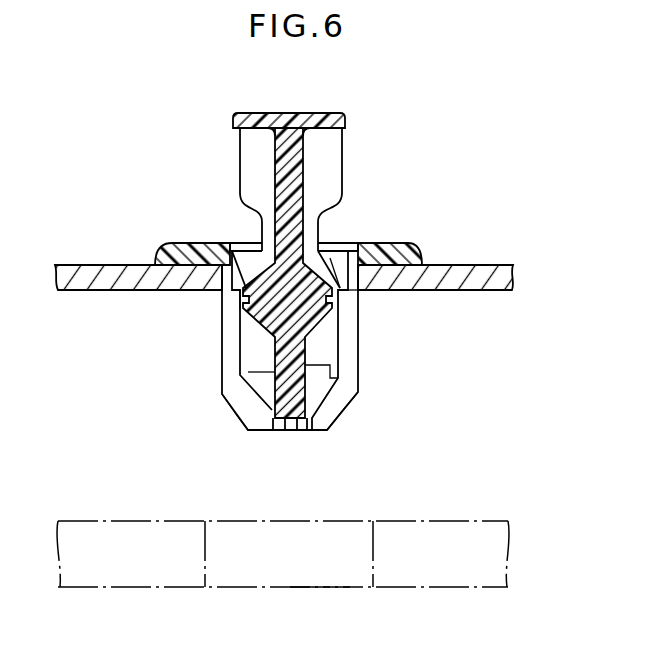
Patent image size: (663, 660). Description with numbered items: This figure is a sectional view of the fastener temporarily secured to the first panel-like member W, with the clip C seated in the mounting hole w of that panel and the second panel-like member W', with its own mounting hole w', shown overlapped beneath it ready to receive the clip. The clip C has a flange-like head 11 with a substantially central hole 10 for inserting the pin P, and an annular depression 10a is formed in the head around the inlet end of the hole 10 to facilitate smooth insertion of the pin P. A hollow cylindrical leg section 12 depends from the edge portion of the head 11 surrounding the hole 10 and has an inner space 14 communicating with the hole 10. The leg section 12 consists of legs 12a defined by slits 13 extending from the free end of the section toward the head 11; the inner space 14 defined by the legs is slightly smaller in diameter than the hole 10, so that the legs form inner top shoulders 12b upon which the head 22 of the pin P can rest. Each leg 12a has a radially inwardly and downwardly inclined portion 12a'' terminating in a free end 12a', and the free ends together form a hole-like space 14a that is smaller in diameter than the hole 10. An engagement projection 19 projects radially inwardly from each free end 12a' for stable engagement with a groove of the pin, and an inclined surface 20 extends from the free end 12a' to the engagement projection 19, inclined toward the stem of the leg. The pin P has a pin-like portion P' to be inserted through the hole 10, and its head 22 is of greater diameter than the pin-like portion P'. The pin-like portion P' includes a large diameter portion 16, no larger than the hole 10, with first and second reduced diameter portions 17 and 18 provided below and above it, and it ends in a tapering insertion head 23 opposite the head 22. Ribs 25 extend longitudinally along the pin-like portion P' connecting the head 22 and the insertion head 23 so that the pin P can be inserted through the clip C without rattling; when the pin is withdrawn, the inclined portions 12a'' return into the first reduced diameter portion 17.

The pin P is at (290, 241).
The head 22 is at (338, 112).
The ribs 25 is at (345, 138).
The pin-like portion P' is at (288, 249).
The clip C is at (293, 336).
The hole 10 is at (360, 244).
The annular depression 10a is at (230, 242).
The flange-like head 11 is at (410, 242).
The inner top shoulders 12b is at (378, 243).
The leg section 12 is at (302, 346).
The large diameter portion 16 is at (240, 302).
The first reduced diameter portion 17 is at (262, 356).
The second reduced diameter portion 18 is at (332, 260).
The mounting hole w is at (375, 305).
The inner space 14 is at (338, 347).
The slits 13 is at (355, 395).
The legs 12a is at (384, 415).
The free end 12a' is at (312, 457).
The inclined portion 12a'' is at (299, 438).
The insertion head 23 is at (243, 410).
The engagement projection 19 is at (279, 432).
The inclined surface 20 is at (306, 430).
The hole-like space 14a is at (292, 431).
The first panel-like member W is at (292, 245).
The second panel-like member W' is at (283, 551).
The mounting hole w' is at (320, 610).